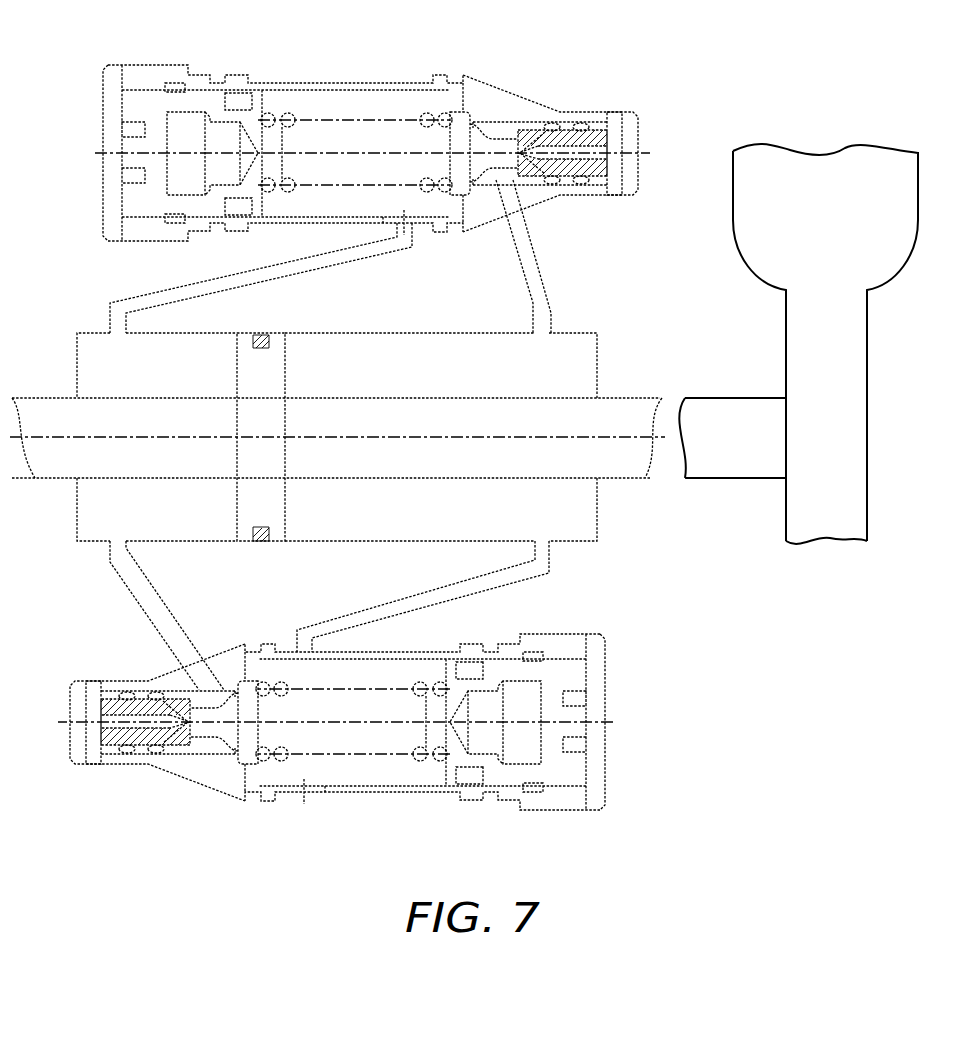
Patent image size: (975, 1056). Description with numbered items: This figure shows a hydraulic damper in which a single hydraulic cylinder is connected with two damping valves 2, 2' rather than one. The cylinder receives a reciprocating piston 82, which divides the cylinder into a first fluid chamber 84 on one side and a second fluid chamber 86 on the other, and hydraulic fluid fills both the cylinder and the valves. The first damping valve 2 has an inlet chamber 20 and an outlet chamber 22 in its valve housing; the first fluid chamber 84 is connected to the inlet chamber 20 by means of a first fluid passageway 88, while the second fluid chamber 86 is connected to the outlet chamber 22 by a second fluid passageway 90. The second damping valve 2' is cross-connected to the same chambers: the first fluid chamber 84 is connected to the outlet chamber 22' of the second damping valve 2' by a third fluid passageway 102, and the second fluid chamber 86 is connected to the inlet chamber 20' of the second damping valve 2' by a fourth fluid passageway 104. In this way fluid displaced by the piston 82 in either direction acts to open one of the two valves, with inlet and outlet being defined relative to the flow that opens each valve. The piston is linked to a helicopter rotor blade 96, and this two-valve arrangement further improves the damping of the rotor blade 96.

The damping valve 2 is at (335, 748).
The second damping valve 2' is at (374, 133).
The inlet chamber 20 is at (149, 756).
The inlet chamber 20' is at (558, 115).
The outlet chamber 22 is at (422, 740).
The outlet chamber 22' is at (285, 138).
The piston 82 is at (275, 367).
The first fluid chamber 84 is at (85, 527).
The second fluid chamber 86 is at (586, 528).
The first fluid passageway 88 is at (138, 600).
The second fluid passageway 90 is at (370, 608).
The rotor blade 96 is at (846, 348).
The third fluid passageway 102 is at (322, 267).
The fourth fluid passageway 104 is at (535, 253).